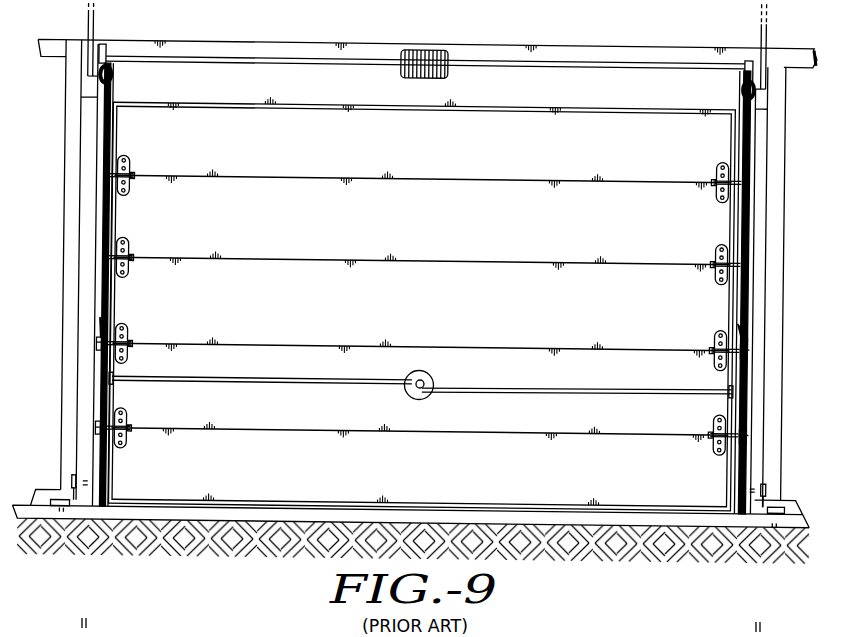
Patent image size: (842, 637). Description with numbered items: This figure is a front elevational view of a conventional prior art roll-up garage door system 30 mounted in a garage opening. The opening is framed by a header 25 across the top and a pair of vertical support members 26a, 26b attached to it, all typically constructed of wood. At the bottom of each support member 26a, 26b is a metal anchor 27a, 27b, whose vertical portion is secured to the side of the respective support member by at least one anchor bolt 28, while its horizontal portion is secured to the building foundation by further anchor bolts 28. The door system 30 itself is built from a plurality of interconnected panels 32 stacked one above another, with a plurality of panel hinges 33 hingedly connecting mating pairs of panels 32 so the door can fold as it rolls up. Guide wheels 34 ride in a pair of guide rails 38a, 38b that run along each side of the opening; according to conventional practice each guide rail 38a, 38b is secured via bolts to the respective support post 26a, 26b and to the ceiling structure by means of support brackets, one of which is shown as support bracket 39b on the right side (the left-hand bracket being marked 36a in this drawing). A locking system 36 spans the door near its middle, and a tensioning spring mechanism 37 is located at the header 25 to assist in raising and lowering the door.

The header 25 is at (619, 53).
The vertical support member 26a is at (87, 301).
The vertical support member 26b is at (756, 258).
The metal anchor 27a is at (72, 502).
The metal anchor 27b is at (749, 502).
The anchor bolts 28 is at (76, 484).
The roll-up garage door system 30 is at (57, 150).
The interconnected panels 32 is at (127, 287).
The panel hinges 33 is at (722, 243).
The guide wheels 34 is at (751, 353).
The locking system 36 is at (263, 380).
The left header roller cap 36a is at (79, 69).
The tensioning spring mechanism 37 is at (442, 52).
The guide rail 38a is at (97, 129).
The guide rail 38b is at (743, 137).
The support bracket 39b is at (760, 64).